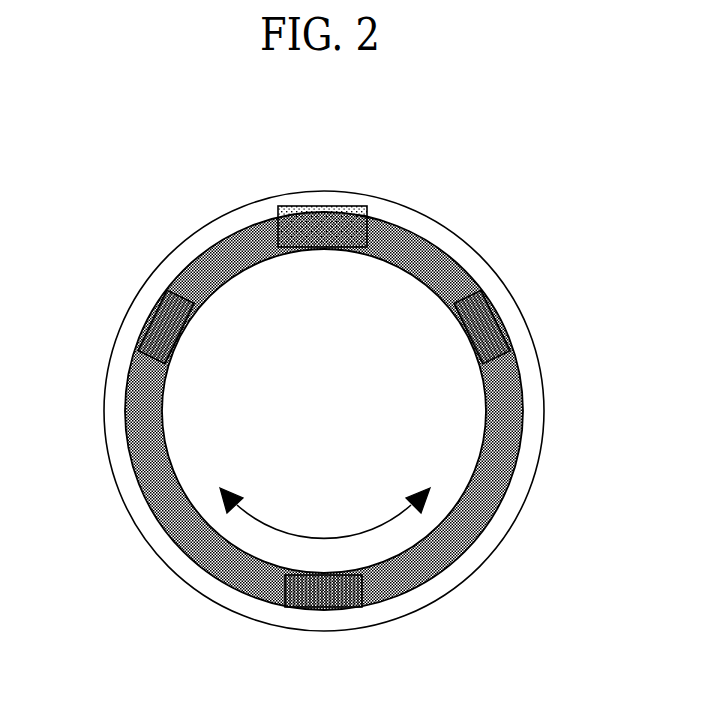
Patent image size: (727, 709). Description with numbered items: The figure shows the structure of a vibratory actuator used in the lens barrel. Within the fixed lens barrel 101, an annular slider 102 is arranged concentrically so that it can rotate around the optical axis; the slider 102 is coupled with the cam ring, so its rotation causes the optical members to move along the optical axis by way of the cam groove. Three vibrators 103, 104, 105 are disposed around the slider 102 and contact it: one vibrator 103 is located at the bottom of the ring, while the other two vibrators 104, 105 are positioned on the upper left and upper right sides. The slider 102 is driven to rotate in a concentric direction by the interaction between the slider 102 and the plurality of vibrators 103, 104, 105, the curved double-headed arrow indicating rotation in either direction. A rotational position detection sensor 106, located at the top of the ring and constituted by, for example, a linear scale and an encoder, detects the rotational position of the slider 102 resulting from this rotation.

The fixed lens barrel 101 is at (532, 443).
The slider 102 is at (482, 510).
The vibrator 103 is at (328, 604).
The vibrator 104 is at (158, 311).
The vibrator 105 is at (498, 319).
The rotational position detection sensor 106 is at (320, 218).